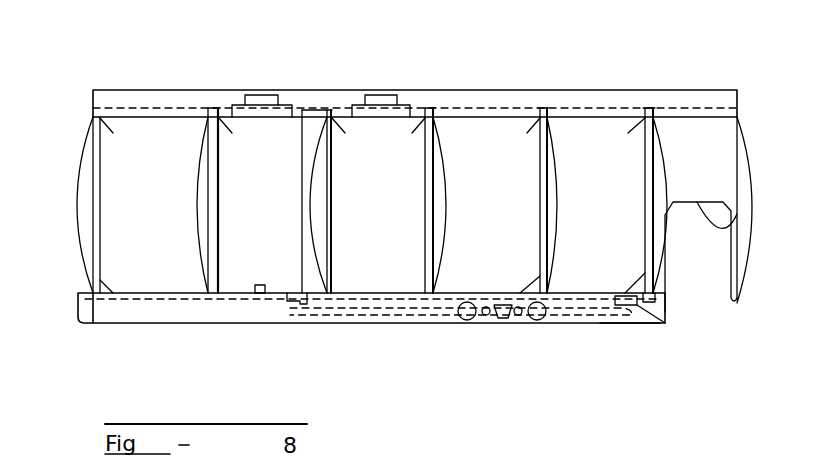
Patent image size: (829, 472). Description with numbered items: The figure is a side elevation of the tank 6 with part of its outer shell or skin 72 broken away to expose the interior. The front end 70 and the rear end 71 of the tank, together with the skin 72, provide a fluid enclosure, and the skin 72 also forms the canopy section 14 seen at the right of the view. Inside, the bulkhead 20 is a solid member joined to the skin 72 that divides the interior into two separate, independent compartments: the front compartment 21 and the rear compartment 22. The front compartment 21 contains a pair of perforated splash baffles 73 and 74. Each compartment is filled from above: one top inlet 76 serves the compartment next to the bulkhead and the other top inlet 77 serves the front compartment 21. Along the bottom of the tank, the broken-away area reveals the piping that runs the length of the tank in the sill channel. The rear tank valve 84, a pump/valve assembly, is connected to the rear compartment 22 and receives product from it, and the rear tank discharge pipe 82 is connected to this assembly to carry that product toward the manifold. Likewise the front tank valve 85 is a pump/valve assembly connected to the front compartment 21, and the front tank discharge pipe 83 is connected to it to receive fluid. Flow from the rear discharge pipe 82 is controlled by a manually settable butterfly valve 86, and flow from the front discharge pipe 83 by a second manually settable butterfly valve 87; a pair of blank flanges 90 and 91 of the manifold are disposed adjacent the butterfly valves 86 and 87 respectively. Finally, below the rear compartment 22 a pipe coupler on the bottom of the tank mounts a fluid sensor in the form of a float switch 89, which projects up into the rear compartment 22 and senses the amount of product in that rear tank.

The tank 6 is at (362, 55).
The canopy section 14 is at (764, 183).
The bulkhead 20 is at (316, 198).
The front compartment 21 is at (603, 196).
The rear compartment 22 is at (161, 196).
The front end of the tank 70 is at (660, 165).
The rear end of the tank 71 is at (80, 162).
The outer skin 72 is at (478, 150).
The perforated splash baffle 73 is at (447, 225).
The perforated splash baffle 74 is at (550, 230).
The top inlet 76 is at (265, 94).
The top inlet 77 is at (390, 94).
The rear tank discharge pipe 82 is at (324, 323).
The front tank discharge pipe 83 is at (627, 325).
The rear tank valve 84 is at (287, 298).
The front tank valve 85 is at (665, 322).
The butterfly valve 86 is at (485, 316).
The butterfly valve 87 is at (518, 316).
The float switch 89 is at (262, 288).
The blank flange 90 is at (462, 315).
The blank flange 91 is at (540, 316).